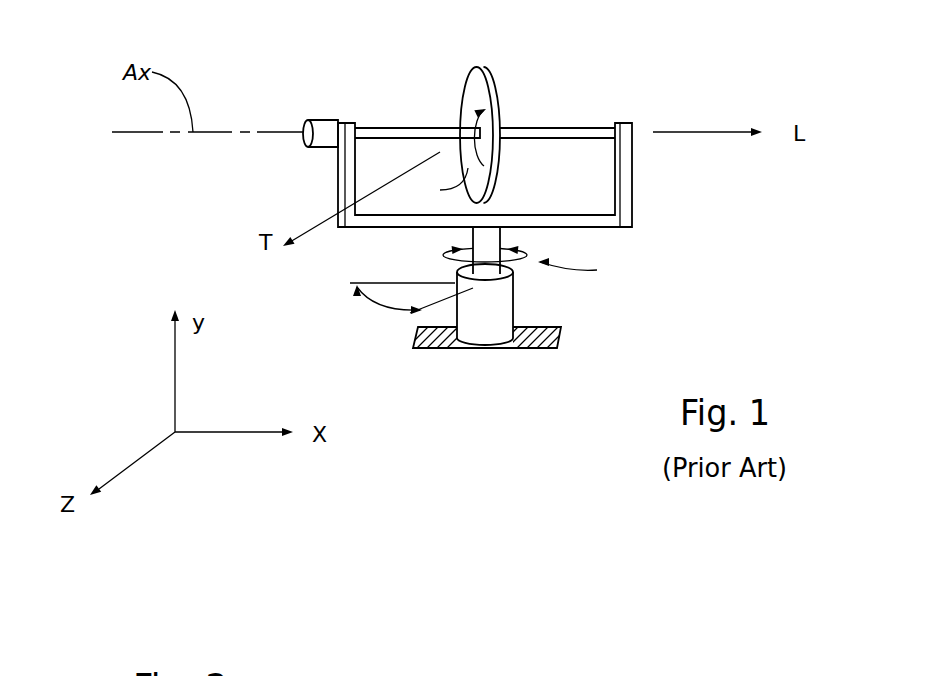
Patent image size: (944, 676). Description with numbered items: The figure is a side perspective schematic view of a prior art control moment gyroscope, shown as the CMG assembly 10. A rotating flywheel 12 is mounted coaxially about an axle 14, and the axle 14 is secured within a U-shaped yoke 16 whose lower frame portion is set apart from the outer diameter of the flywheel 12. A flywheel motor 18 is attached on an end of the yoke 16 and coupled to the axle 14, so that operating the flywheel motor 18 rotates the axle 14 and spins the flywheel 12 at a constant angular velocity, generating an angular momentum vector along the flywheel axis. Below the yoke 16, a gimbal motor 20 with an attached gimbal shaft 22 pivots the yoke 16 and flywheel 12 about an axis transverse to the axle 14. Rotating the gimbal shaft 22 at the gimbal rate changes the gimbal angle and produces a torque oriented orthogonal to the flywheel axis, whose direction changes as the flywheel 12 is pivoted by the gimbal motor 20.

The CMG assembly 10 is at (222, 205).
The flywheel 12 is at (473, 85).
The axle 14 is at (382, 128).
The U-shaped yoke 16 is at (632, 200).
The flywheel motor 18 is at (325, 120).
The gimbal motor 20 is at (567, 300).
The gimbal shaft 22 is at (463, 233).